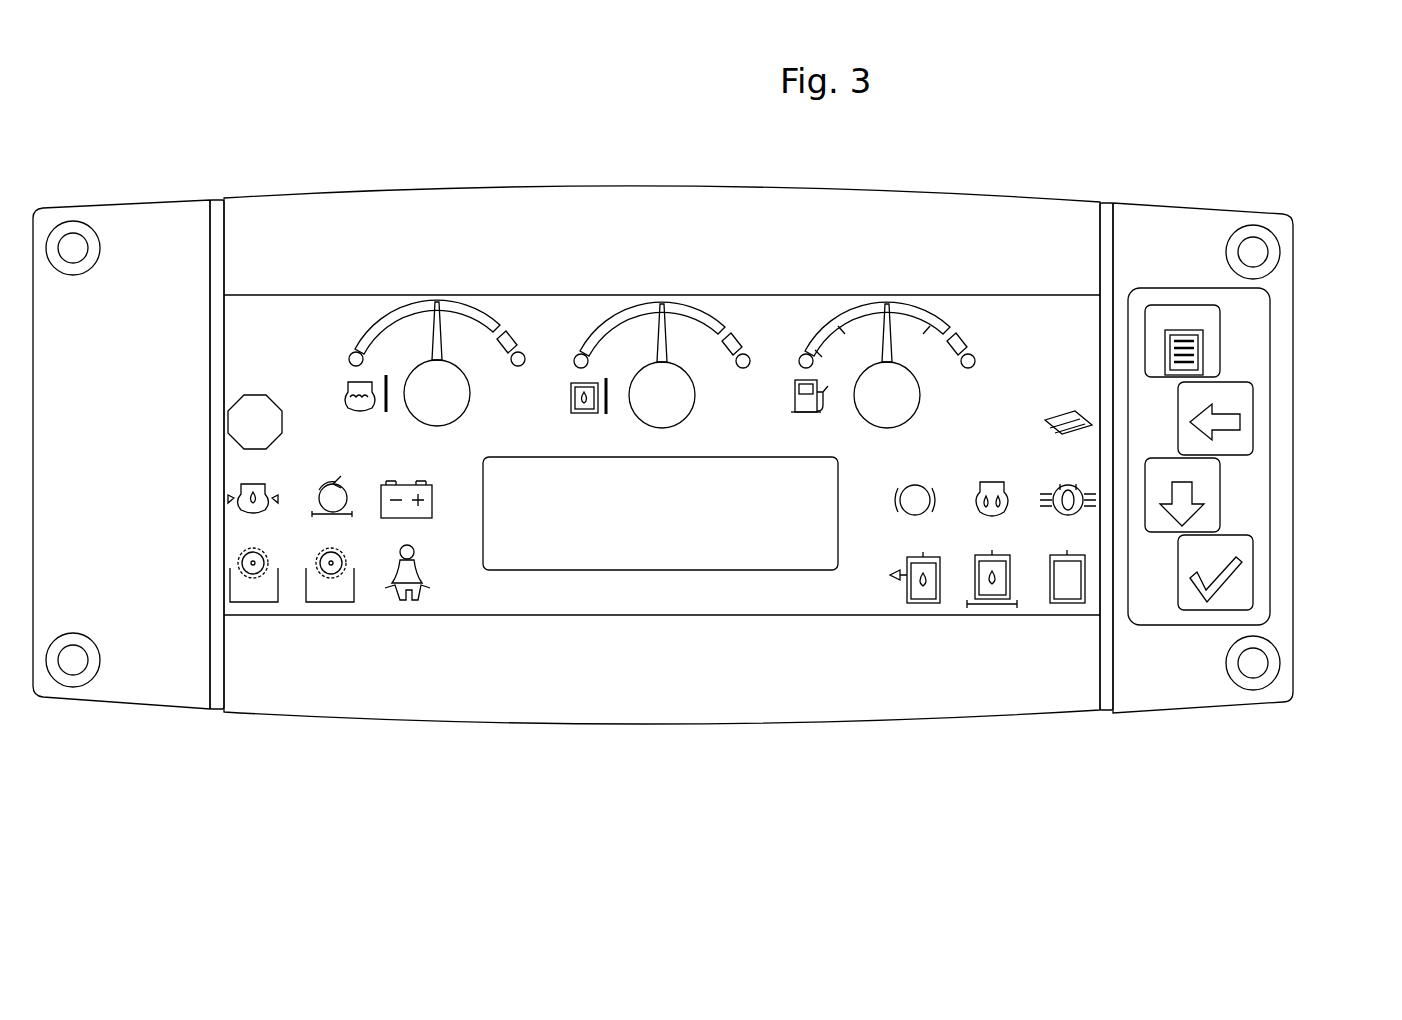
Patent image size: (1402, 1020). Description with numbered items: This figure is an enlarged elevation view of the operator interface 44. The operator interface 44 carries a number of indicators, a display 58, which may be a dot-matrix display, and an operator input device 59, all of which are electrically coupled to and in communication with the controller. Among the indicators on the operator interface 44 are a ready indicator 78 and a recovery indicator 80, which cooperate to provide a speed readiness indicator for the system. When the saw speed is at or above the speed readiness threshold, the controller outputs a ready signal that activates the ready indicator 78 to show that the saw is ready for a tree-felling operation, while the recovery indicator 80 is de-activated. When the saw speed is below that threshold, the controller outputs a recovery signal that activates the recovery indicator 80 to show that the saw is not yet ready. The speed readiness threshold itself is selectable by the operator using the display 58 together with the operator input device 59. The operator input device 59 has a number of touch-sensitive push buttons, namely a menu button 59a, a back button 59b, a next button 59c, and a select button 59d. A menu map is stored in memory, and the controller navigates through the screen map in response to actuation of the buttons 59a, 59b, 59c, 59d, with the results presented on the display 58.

The operator interface 44 is at (709, 415).
The display 58 is at (607, 515).
The operator input device 59 is at (1256, 532).
The menu button 59a is at (1220, 342).
The back button 59b is at (1253, 405).
The next button 59c is at (1220, 490).
The select button 59d is at (1253, 575).
The ready indicator 78 is at (260, 600).
The recovery indicator 80 is at (337, 600).